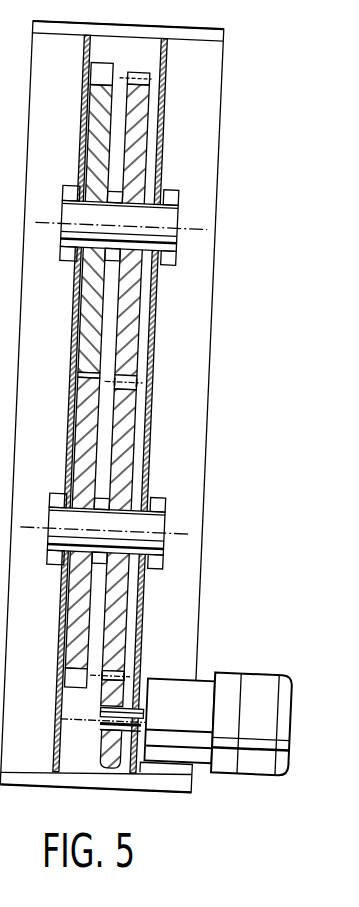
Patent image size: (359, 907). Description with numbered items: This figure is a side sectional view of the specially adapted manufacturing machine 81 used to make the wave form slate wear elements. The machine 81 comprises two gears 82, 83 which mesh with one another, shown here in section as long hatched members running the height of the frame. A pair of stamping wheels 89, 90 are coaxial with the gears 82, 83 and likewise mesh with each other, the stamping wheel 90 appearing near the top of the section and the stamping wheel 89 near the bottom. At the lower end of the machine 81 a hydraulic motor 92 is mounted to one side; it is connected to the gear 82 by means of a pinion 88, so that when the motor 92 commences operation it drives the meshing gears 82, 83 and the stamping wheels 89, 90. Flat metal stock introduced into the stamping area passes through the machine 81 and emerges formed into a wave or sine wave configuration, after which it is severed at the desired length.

The manufacturing machine 81 is at (241, 383).
The gear 82 is at (154, 586).
The gear 83 is at (152, 121).
The pinion 88 is at (131, 737).
The stamping wheel 89 is at (102, 651).
The stamping wheel 90 is at (102, 115).
The hydraulic motor 92 is at (316, 715).